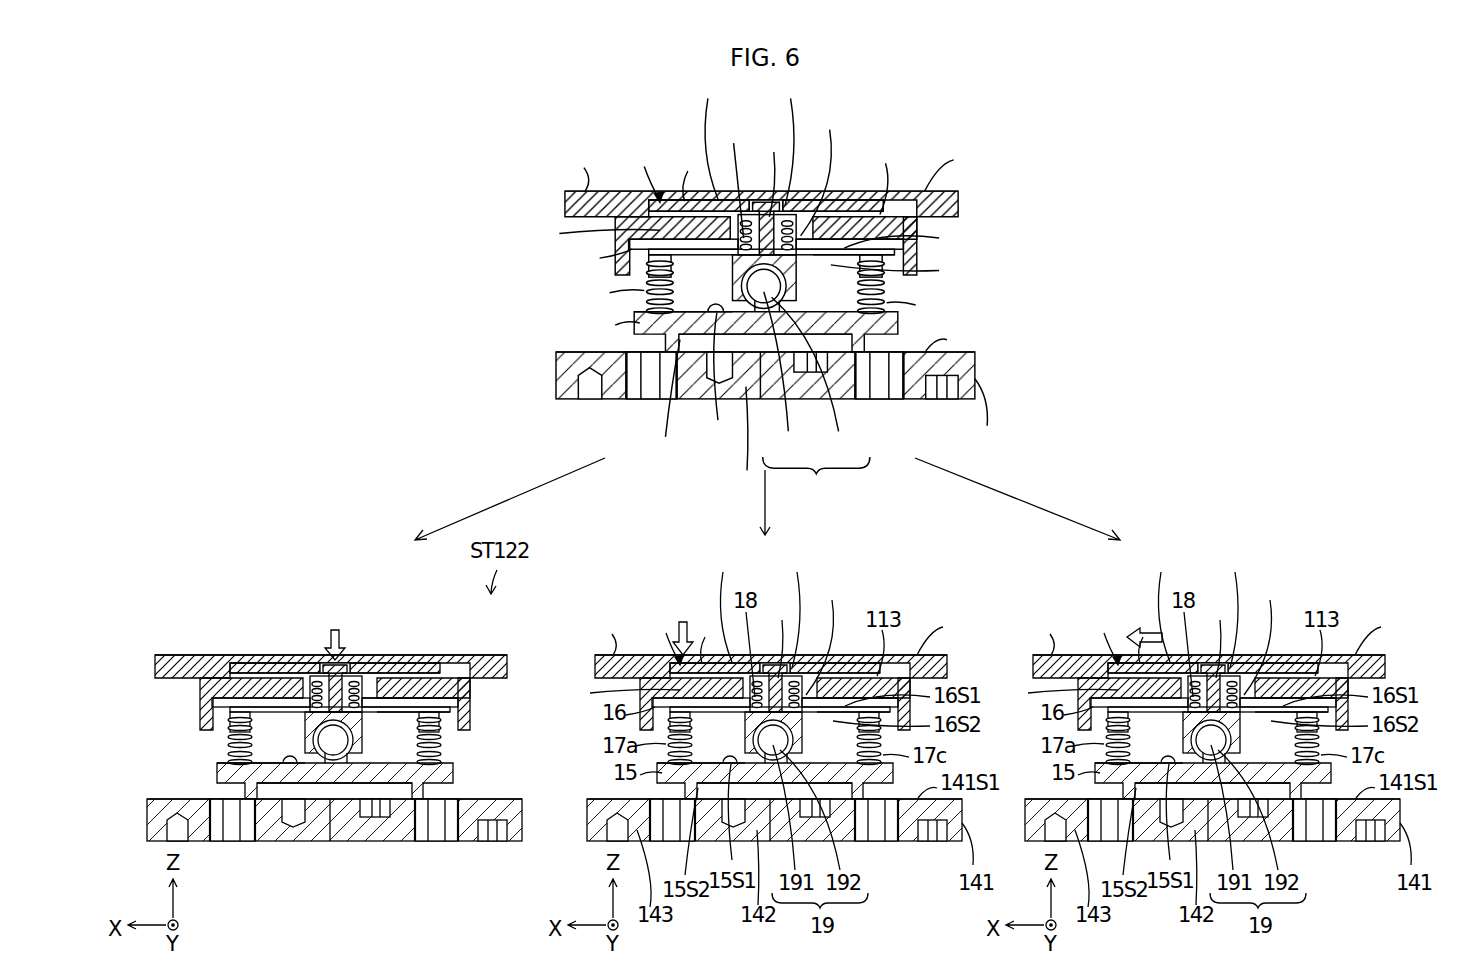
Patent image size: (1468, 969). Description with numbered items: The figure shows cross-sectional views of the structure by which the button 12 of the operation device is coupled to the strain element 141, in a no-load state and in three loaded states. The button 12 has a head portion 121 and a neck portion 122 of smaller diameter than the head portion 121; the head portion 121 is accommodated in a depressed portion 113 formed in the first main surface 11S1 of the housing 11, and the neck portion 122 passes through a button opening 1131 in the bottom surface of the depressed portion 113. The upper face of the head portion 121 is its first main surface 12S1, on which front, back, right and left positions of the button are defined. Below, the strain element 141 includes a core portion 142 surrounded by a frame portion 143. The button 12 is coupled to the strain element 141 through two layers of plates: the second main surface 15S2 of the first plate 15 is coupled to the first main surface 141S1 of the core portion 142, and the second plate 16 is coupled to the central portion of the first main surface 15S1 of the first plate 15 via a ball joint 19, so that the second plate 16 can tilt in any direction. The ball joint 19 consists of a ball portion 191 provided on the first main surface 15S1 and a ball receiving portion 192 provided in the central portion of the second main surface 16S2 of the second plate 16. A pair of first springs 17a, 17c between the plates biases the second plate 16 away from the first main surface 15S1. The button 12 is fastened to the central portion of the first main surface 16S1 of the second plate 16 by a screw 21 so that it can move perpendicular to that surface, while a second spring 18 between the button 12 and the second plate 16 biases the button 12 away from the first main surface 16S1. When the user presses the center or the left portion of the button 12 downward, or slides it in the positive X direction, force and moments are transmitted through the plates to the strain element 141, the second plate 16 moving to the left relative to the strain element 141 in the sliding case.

The housing 11 is at (173, 655).
The first main surface of the housing 11S1 is at (477, 655).
The button 12 is at (240, 665).
The head portion 121 is at (262, 664).
The neck portion 122 is at (352, 668).
The first main surface of the head portion 12S1 is at (292, 662).
The depressed portion 113 is at (437, 676).
The button opening 1131 is at (366, 695).
The first plate 15 is at (222, 773).
The first main surface of the first plate 15S1 is at (291, 764).
The second main surface of the first plate 15S2 is at (258, 788).
The second plate 16 is at (215, 707).
The first main surface of the second plate 16S1 is at (405, 706).
The second main surface of the second plate 16S2 is at (393, 721).
The first spring 17a is at (226, 744).
The first spring 17c is at (443, 755).
The second spring 18 is at (315, 697).
The ball joint 19 is at (428, 893).
The ball portion 191 is at (333, 745).
The ball receiving portion 192 is at (340, 750).
The screw 21 is at (338, 678).
The strain element 141 is at (522, 823).
The first main surface of the strain element 141S1 is at (478, 798).
The core portion 142 is at (317, 830).
The frame portion 143 is at (197, 830).